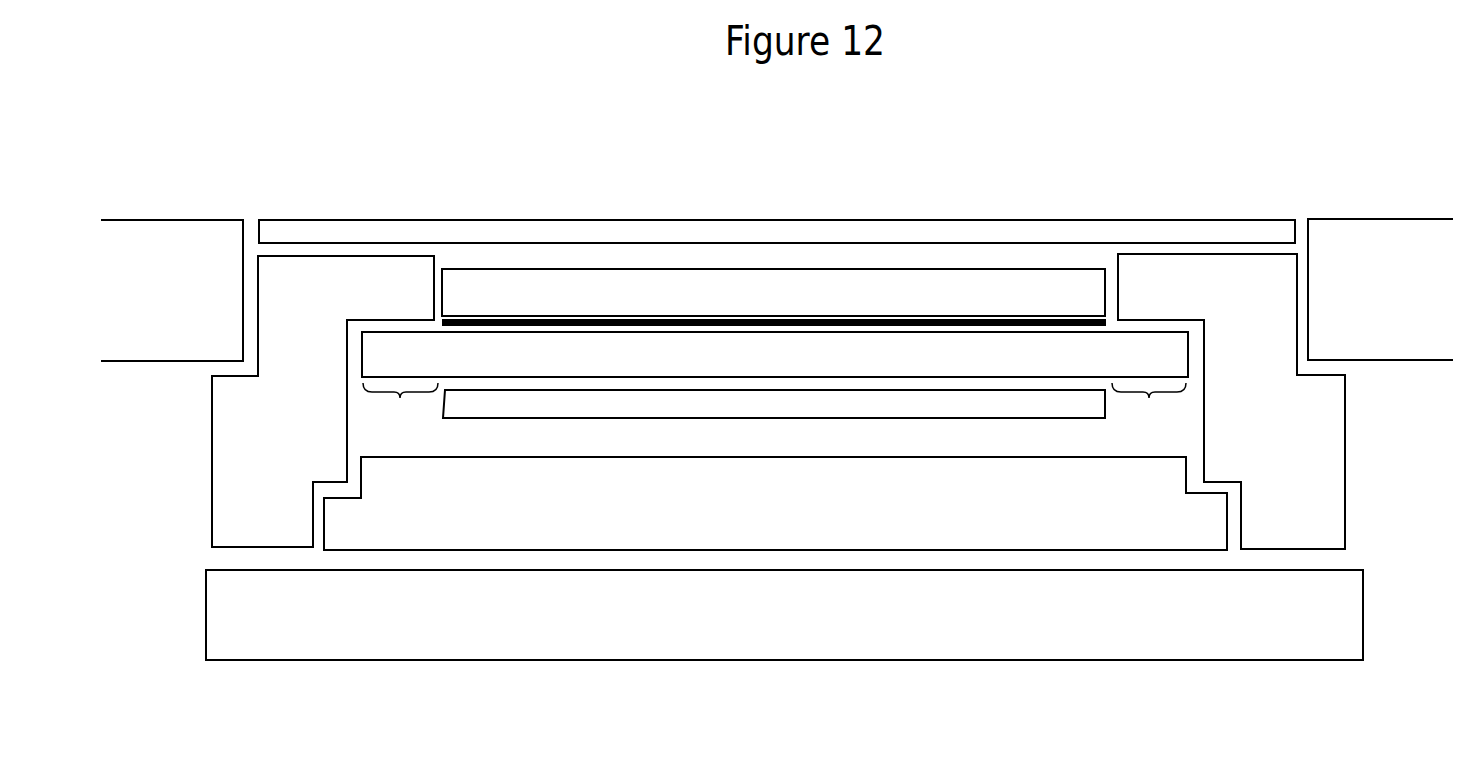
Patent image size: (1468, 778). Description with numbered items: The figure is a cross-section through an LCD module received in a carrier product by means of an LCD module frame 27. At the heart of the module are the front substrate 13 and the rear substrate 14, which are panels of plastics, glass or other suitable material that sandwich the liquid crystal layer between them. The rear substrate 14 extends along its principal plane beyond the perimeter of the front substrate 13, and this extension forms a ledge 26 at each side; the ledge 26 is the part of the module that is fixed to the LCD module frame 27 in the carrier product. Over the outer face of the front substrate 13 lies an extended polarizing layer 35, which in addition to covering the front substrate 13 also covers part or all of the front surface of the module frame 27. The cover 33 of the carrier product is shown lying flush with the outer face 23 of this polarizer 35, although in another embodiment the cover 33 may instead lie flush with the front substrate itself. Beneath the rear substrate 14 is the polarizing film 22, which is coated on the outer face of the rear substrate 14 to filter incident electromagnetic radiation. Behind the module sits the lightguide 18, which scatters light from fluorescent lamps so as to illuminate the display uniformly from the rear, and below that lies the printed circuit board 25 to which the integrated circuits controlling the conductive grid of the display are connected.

The outer face 23 is at (777, 210).
The extended polarizing layer 35 is at (777, 232).
The cover 33 is at (777, 290).
The LCD module frame 27 is at (778, 401).
The front substrate 13 is at (773, 297).
The rear substrate 14 is at (775, 354).
The ledge 26 is at (774, 402).
The polarizing film 22 is at (774, 404).
The lightguide 18 is at (775, 503).
The Printed Circuit Board 25 is at (784, 615).